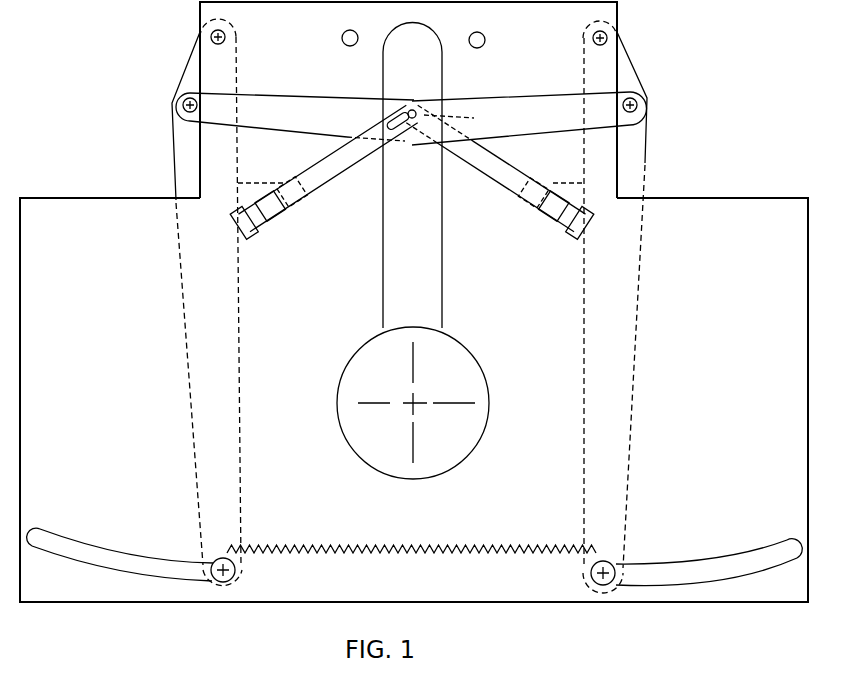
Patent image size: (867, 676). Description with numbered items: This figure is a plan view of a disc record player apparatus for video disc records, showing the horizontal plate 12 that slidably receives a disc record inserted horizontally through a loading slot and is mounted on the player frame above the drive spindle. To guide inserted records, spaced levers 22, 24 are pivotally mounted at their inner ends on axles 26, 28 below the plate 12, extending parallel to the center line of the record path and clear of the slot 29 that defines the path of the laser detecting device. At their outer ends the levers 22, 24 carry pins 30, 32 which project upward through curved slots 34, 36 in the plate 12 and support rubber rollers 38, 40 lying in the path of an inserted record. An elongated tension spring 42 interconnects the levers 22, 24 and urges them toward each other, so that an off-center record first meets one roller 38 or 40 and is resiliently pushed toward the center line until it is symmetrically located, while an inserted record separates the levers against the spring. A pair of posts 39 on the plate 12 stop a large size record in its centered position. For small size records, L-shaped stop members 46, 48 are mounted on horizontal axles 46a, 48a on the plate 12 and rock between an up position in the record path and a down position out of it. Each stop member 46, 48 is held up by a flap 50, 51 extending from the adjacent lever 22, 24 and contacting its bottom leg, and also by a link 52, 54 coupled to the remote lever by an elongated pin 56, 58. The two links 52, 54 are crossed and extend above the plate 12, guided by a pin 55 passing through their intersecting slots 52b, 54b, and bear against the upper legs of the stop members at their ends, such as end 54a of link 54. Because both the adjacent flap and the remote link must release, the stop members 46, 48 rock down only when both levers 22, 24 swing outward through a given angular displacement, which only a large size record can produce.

The horizontal plate 12 is at (746, 198).
The lever 22 is at (205, 400).
The lever 24 is at (620, 386).
The axle 26 is at (226, 34).
The axle 28 is at (608, 36).
The slot 29 is at (386, 292).
The pin 30 is at (200, 548).
The pin 32 is at (592, 555).
The curved slot 34 is at (90, 548).
The curved slot 36 is at (726, 566).
The rubber roller 38 is at (237, 571).
The post 39 is at (493, 24).
The rubber roller 40 is at (590, 573).
The tension spring 42 is at (479, 548).
The L-shaped stop member 46 is at (248, 240).
The horizontal axle 46a is at (260, 240).
The L-shaped stop member 48 is at (582, 236).
The horizontal axle 48a is at (556, 232).
The flap 50 is at (293, 228).
The flap 51 is at (540, 208).
The link 52 is at (322, 100).
The slot 52b is at (403, 137).
The link 54 is at (532, 100).
The link end 54a is at (245, 203).
The slot 54b is at (474, 120).
The pin 55 is at (412, 110).
The elongated pin 56 is at (182, 105).
The elongated pin 58 is at (640, 100).